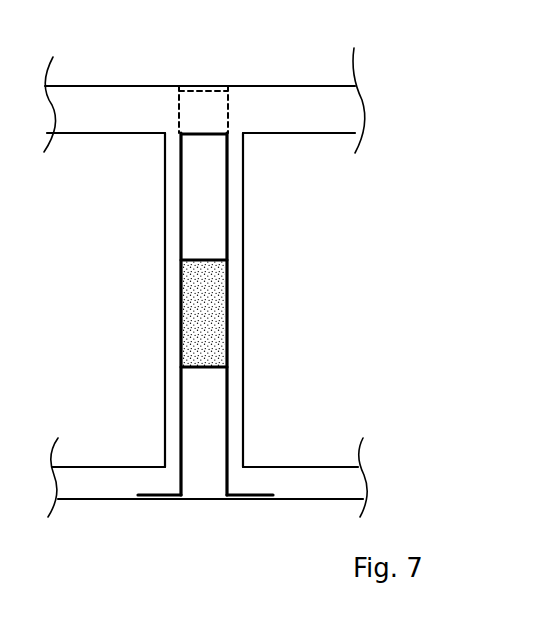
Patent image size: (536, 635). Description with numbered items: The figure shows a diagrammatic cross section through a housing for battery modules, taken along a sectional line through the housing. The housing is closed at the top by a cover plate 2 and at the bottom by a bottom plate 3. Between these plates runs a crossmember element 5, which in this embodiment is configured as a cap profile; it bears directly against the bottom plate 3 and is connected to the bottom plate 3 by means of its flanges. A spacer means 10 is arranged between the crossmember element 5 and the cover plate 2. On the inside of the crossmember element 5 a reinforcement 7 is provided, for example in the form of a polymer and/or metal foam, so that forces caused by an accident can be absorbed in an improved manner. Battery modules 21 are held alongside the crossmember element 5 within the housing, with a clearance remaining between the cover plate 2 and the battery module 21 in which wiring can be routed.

The cover plate 2 is at (107, 86).
The spacer means 10 is at (197, 103).
The battery module 21 is at (165, 308).
The crossmember element 5 is at (228, 420).
The reinforcement 7 is at (215, 315).
The bottom plate 3 is at (277, 500).